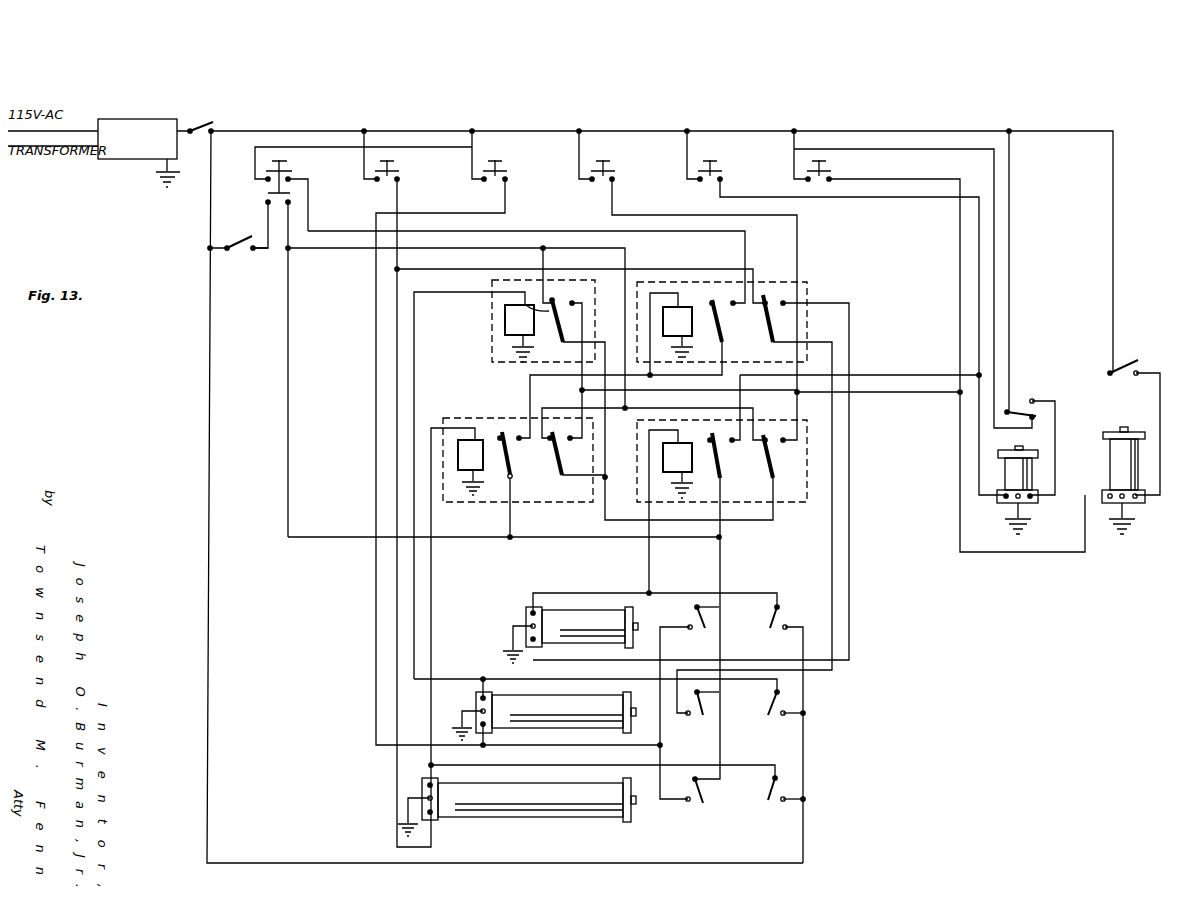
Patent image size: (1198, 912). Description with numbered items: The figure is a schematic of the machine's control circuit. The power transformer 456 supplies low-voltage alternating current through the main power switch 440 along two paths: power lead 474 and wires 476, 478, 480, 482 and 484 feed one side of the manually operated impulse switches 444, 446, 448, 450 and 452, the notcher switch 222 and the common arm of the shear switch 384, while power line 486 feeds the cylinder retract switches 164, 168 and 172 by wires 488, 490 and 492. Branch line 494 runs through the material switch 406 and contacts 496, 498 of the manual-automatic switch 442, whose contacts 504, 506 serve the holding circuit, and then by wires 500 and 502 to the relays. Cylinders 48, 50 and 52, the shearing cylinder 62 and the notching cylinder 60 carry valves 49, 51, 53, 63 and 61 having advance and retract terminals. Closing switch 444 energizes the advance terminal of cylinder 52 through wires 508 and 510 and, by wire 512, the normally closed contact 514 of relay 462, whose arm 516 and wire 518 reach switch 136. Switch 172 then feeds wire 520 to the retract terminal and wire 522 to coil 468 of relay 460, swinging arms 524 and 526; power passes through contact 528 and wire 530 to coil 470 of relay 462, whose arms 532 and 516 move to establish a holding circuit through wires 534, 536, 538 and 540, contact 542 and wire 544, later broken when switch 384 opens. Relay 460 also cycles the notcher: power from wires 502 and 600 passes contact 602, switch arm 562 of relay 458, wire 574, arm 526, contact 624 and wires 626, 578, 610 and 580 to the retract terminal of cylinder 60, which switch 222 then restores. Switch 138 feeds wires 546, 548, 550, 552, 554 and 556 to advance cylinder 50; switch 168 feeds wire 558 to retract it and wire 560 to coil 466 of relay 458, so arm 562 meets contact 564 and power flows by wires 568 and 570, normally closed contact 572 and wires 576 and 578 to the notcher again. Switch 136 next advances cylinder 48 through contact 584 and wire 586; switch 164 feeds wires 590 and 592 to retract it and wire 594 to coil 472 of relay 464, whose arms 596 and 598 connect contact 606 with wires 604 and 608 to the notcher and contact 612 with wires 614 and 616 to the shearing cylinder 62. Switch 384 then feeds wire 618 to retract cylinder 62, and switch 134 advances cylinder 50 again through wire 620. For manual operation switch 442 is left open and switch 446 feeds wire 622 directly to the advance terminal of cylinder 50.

The power transformer 456 is at (137, 126).
The main power switch 440 is at (218, 125).
The power lead 474 is at (320, 131).
The power line 486 is at (209, 213).
The wire 476 is at (361, 160).
The wire 478 is at (469, 159).
The wire 480 is at (577, 159).
The wire 482 is at (685, 159).
The wire 484 is at (792, 159).
The manually operated impulse switch 452 is at (833, 181).
The contact of switch 442 504 is at (264, 180).
The contact of switch 442 506 is at (291, 179).
The single-throw double-pole switch 442 is at (265, 203).
The contact of switch 442 496 is at (267, 204).
The contact of switch 442 498 is at (290, 204).
The material indicating switch 406 is at (239, 252).
The branch power line 494 is at (280, 248).
The wire 508 is at (388, 207).
The manually operated impulse switch 444 is at (399, 180).
The manually operated impulse switch 446 is at (507, 180).
The manually operated impulse switch 448 is at (614, 180).
The manually operated impulse switch 450 is at (722, 180).
The wire 622 is at (452, 215).
The wire 540 is at (532, 231).
The wire 502 is at (440, 248).
The wire 512 is at (440, 269).
The wire 600 is at (548, 259).
The wire 568 is at (628, 257).
The wire 538 is at (906, 149).
The wire 536 is at (994, 178).
The wire 534 is at (1013, 220).
The electromagnetic relay 458 is at (488, 345).
The relay coil 466 is at (504, 318).
The wire 560 is at (416, 346).
The relay contact 602 is at (500, 290).
The relay switch arm 562 is at (557, 338).
The relay contact 564 is at (571, 300).
The wire 576 is at (584, 318).
The electromagnetic relay 462 is at (815, 292).
The relay coil 470 is at (673, 308).
The relay arm 532 is at (723, 330).
The relay contact 542 is at (733, 302).
The relay contact 584 is at (778, 312).
The normally closed contact 514 is at (758, 299).
The relay switch arm 516 is at (768, 318).
The wire 518 is at (833, 354).
The wire 614 is at (875, 375).
The wire 544 is at (653, 377).
The shear switch 384 is at (1036, 399).
The wire 618 is at (1057, 421).
The notcher switch 222 is at (1132, 355).
The electromagnetic relay 460 is at (473, 415).
The relay coil 468 is at (470, 476).
The relay arm 524 is at (513, 476).
The relay contact 528 is at (518, 435).
The wire 530 is at (530, 372).
The normally closed contact 572 is at (511, 455).
The relay arm 526 is at (537, 489).
The relay contact 624 is at (569, 443).
The wire 626 is at (569, 435).
The wire 570 is at (580, 391).
The wire 578 is at (634, 406).
The wire 574 is at (620, 430).
The wire 510 is at (377, 455).
The wire 500 is at (287, 339).
The electromagnetic relay 464 is at (786, 505).
The relay coil 472 is at (680, 476).
The relay switch arm 596 is at (721, 479).
The relay contact 612 is at (734, 436).
The relay switch arm 598 is at (769, 456).
The relay contact 606 is at (784, 437).
The wire 608 is at (812, 407).
The wire 610 is at (894, 393).
The wire 580 is at (960, 435).
The wire 586 is at (851, 474).
The wire 604 is at (605, 522).
The shearing cylinder 62 is at (1003, 455).
The wire 616 is at (983, 497).
The valve 63 is at (1035, 508).
The notching cylinder 60 is at (1118, 459).
The solenoid terminal 61 is at (1145, 507).
The cylinder 48 is at (515, 592).
The electrically operated valve 49 is at (531, 614).
The wire 592 is at (632, 593).
The wire 590 is at (744, 593).
The wire 594 is at (649, 562).
The wire 546 is at (545, 538).
The wire 548 is at (721, 552).
The switch 134 is at (694, 611).
The wire 620 is at (661, 651).
The retract switch 164 is at (791, 613).
The wire 488 is at (786, 632).
The wire 550 is at (721, 637).
The cylinder 50 is at (483, 663).
The electrically operated valve 51 is at (478, 700).
The wire 558 is at (545, 676).
The wire 556 is at (560, 746).
The normally open switch 136 is at (693, 719).
The retract switch 168 is at (773, 720).
The wire 490 is at (787, 720).
The wire 552 is at (720, 718).
The cylinder 52 is at (565, 822).
The electrically operated valve 53 is at (428, 786).
The wire 520 is at (535, 766).
The wire 522 is at (433, 593).
The switch 138 is at (695, 806).
The wire 554 is at (675, 777).
The retract switch 172 is at (772, 805).
The wire 492 is at (787, 810).